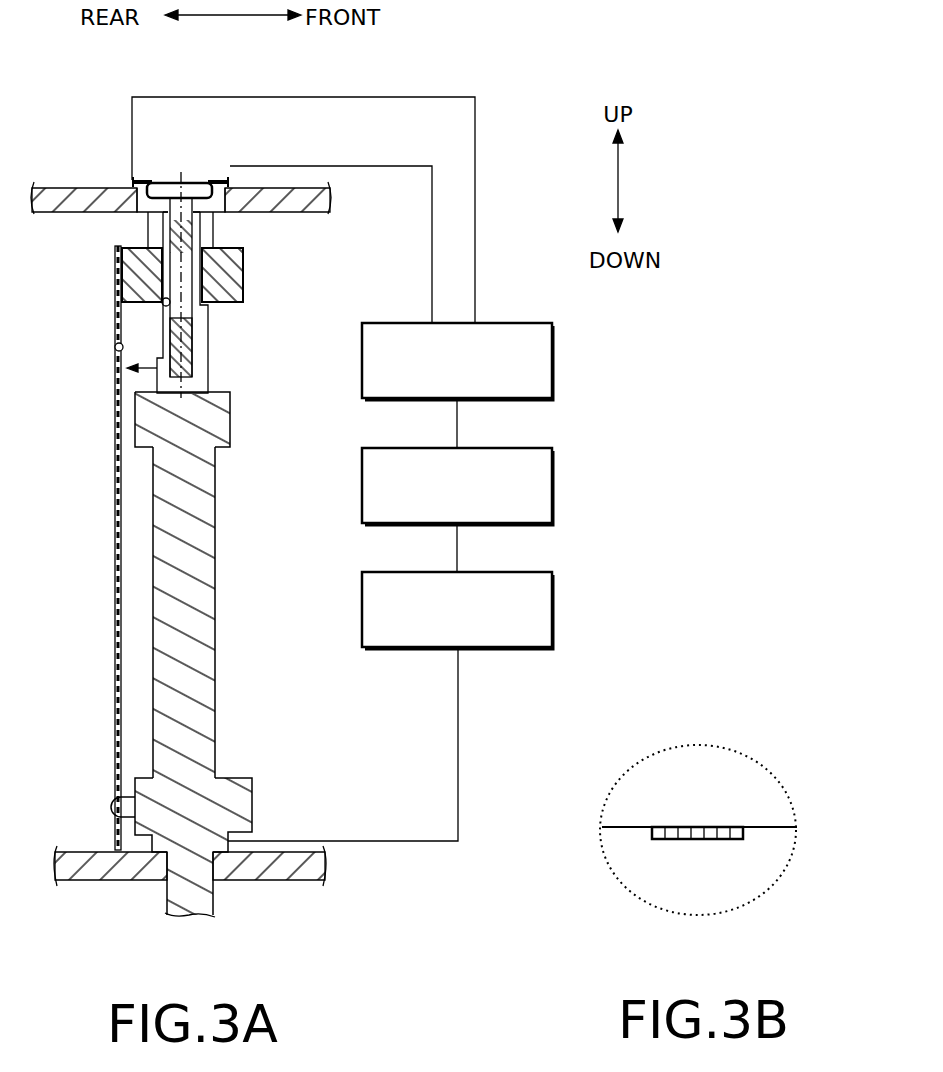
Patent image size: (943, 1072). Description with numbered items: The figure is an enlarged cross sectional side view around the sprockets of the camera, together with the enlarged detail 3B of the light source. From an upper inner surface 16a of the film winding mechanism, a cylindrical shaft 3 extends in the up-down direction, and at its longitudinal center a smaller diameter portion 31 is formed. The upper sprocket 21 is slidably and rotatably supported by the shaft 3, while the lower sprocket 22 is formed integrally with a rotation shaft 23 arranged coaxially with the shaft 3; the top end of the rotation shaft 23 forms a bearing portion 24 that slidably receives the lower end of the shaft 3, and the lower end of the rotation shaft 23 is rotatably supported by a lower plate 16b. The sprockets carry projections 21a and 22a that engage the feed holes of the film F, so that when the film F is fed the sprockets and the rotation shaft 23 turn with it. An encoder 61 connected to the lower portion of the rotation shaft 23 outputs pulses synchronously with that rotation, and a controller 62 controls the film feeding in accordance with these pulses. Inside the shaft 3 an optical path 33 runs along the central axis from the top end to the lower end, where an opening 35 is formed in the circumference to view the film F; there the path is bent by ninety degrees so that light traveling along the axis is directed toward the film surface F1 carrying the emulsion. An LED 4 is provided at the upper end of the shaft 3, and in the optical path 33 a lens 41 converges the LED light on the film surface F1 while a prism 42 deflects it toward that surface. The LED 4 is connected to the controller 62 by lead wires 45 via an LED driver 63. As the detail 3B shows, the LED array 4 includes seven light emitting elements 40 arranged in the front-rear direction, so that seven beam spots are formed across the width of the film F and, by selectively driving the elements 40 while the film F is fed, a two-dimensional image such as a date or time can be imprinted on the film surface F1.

In FIG. 3A, the detail view reference 3B is at (172, 180).
In FIG. 3A, the LED 4 is at (184, 181).
In FIG. 3B, the LED 4 is at (622, 828).
In FIG. 3A, the lead wires 45 is at (135, 181).
In FIG. 3A, the lens 41 is at (148, 223).
In FIG. 3A, the smaller diameter portion 31 is at (200, 246).
In FIG. 3A, the upper inner surface 16a is at (293, 213).
In FIG. 3A, the projections 21a is at (121, 272).
In FIG. 3A, the upper sprocket 21 is at (243, 288).
In FIG. 3A, the optical path 33 is at (163, 304).
In FIG. 3A, the cylindrical shaft 3 is at (208, 325).
In FIG. 3A, the film surface F1 is at (118, 347).
In FIG. 3A, the prism 42 is at (194, 343).
In FIG. 3A, the opening 35 is at (157, 373).
In FIG. 3A, the bearing portion 24 is at (208, 405).
In FIG. 3A, the film F is at (115, 472).
In FIG. 3A, the rotation shaft 23 is at (215, 612).
In FIG. 3A, the lower sprocket 22 is at (252, 802).
In FIG. 3A, the projections 22a is at (116, 803).
In FIG. 3A, the lower plate 16b is at (270, 879).
In FIG. 3A, the LED driver 63 is at (553, 344).
In FIG. 3A, the controller 62 is at (553, 468).
In FIG. 3A, the encoder 61 is at (553, 592).
In FIG. 3B, the light emitting elements 40 is at (748, 822).